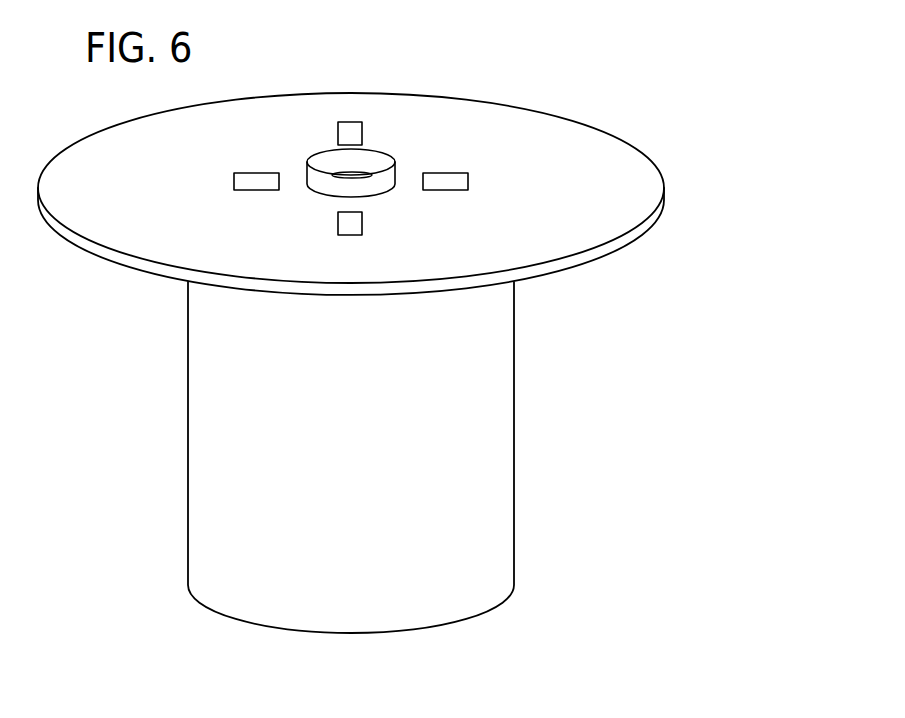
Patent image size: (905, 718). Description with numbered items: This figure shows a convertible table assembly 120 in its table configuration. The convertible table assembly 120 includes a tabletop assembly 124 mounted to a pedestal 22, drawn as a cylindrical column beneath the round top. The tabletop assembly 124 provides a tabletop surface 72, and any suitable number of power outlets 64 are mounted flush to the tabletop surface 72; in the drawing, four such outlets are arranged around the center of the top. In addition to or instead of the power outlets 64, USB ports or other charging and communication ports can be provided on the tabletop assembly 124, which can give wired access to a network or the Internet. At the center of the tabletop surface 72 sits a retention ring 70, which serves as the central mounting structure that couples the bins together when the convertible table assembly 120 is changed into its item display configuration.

The convertible table assembly 120 is at (630, 80).
The tabletop assembly 124 is at (696, 215).
The tabletop surface 72 is at (96, 154).
The power outlets 64 is at (345, 136).
The retention ring 70 is at (384, 158).
The pedestal 22 is at (514, 418).